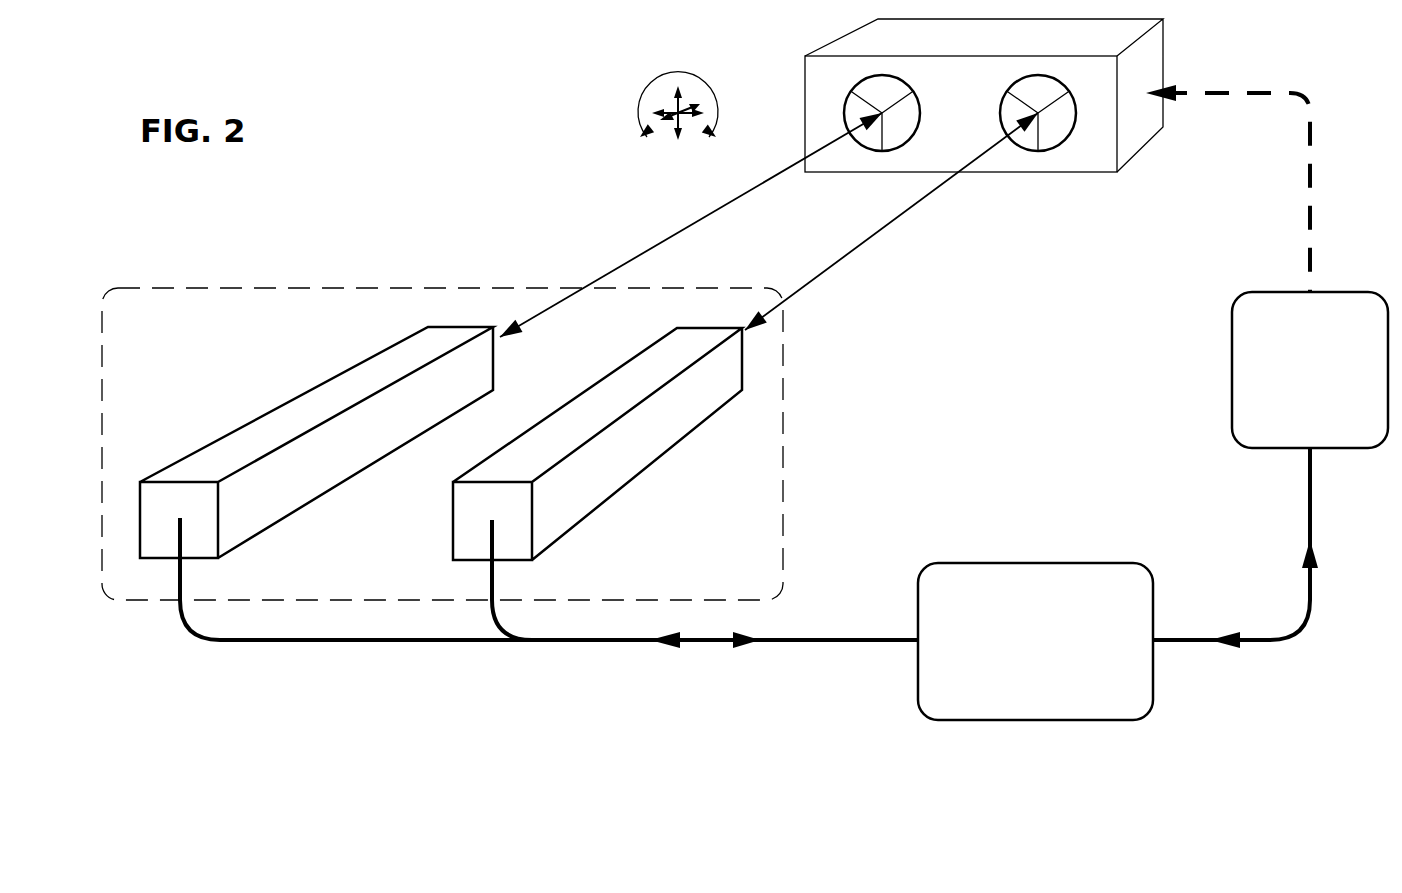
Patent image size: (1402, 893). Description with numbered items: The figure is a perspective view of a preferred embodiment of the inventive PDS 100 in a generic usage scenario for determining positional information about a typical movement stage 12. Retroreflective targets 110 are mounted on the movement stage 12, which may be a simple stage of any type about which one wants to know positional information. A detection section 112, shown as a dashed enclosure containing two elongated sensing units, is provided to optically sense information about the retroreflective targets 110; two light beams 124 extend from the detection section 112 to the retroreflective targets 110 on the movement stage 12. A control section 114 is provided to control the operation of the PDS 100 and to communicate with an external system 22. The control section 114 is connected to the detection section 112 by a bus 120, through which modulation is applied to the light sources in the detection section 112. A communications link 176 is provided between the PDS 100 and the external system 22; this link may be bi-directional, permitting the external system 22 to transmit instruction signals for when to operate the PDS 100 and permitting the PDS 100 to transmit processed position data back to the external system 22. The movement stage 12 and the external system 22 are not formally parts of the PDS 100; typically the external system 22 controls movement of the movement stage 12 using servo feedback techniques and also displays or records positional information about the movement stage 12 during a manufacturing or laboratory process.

The PDS 100 is at (444, 84).
The movement stage 12 is at (846, 89).
The retroreflective targets 110 is at (920, 92).
The light beams 124 is at (707, 217).
The detection section 112 is at (444, 286).
The bus 120 is at (705, 645).
The control section 114 is at (1056, 639).
The communications link 176 is at (1250, 645).
The external system 22 is at (1326, 352).